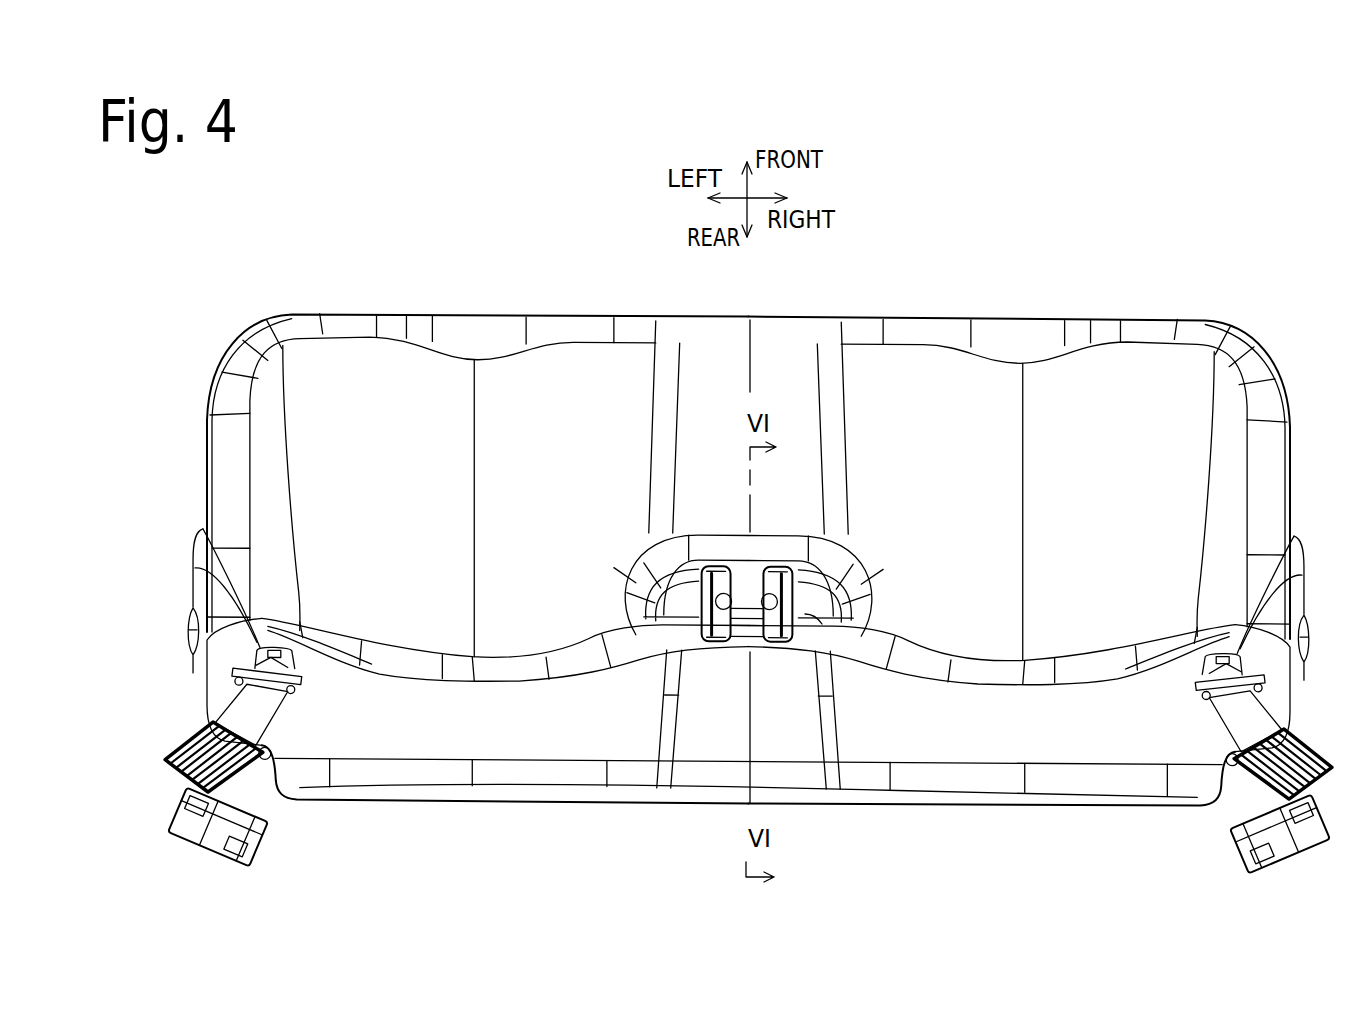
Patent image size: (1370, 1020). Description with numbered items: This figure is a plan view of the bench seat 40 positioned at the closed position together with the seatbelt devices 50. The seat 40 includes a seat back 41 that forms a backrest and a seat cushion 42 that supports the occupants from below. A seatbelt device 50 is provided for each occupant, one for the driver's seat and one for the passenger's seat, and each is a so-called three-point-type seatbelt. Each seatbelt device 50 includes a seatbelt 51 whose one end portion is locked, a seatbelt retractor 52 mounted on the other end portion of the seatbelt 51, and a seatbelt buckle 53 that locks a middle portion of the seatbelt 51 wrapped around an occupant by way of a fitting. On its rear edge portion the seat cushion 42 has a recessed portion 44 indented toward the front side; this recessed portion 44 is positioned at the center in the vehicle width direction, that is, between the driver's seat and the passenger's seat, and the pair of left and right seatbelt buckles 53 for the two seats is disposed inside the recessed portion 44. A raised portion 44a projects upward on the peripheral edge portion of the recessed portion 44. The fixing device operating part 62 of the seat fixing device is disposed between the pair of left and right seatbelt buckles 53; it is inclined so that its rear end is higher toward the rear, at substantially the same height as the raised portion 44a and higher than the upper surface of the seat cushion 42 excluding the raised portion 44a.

The seat 40 is at (922, 272).
The seat back 41 is at (511, 790).
The seat cushion 42 is at (510, 393).
The recessed portion 44 is at (676, 631).
The raised portion 44a is at (818, 613).
The seatbelt device 50 is at (283, 806).
The seatbelt 51 is at (268, 705).
The seatbelt retractor 52 is at (258, 840).
The seatbelt buckle 53 is at (662, 590).
The fixing device operating part 62 is at (745, 640).